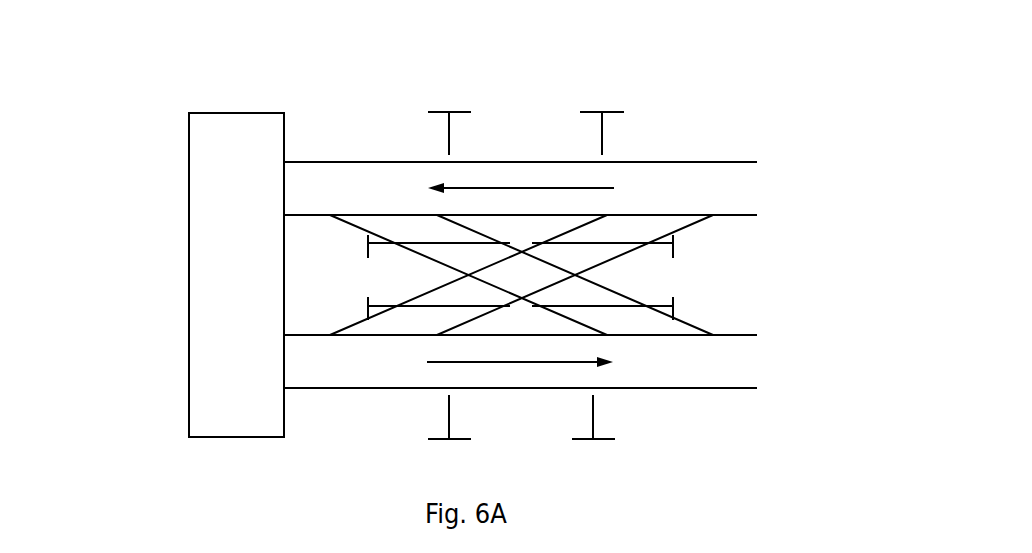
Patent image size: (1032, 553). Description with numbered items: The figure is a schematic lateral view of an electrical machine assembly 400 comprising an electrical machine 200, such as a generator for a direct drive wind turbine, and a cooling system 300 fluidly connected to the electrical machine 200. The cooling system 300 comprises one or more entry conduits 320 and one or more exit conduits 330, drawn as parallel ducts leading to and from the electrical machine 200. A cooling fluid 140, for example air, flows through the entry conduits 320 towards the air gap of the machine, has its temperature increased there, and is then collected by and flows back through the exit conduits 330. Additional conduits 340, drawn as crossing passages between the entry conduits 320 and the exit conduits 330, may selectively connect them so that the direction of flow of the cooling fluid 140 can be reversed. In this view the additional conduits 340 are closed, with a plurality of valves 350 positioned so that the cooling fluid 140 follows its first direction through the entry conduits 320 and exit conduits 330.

The cooling fluid 140 is at (436, 188).
The electrical machine 200 is at (223, 258).
The cooling system 300 is at (582, 243).
The entry conduit 320 is at (732, 189).
The exit conduit 330 is at (732, 365).
The additional conduit 340 is at (595, 253).
The valve 350 is at (460, 112).
The electrical machine assembly 400 is at (330, 126).